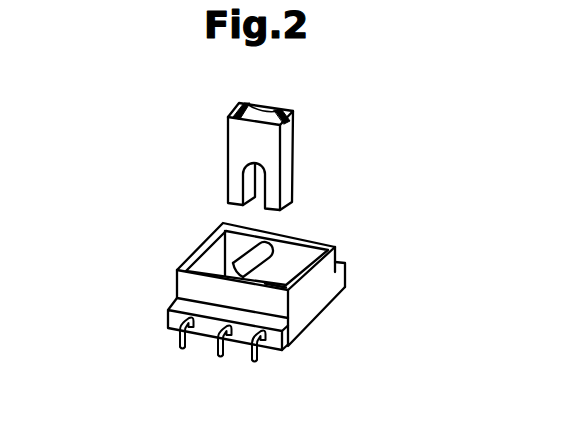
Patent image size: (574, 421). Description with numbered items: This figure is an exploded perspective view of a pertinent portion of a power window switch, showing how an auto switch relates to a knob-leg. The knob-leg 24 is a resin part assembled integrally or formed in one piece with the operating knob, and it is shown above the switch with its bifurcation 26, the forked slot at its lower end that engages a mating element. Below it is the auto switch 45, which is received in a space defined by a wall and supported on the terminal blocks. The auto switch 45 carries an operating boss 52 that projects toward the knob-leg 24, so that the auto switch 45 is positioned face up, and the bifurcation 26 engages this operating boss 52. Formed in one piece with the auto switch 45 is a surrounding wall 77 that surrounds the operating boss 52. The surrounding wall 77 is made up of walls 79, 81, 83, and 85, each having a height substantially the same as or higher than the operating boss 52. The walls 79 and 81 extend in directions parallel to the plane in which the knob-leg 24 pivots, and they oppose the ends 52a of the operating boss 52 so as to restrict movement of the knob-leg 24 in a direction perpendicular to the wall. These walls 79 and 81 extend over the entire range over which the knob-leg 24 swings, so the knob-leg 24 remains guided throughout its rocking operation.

The knob-leg 24 is at (291, 141).
The bifurcation 26 is at (250, 177).
The auto switch 45 is at (347, 262).
The operating boss 52 is at (233, 263).
The ends of the operating boss 52a is at (268, 247).
The surrounding wall 77 is at (321, 244).
The wall 79 is at (299, 236).
The wall 81 is at (277, 291).
The wall 83 is at (318, 271).
The wall 85 is at (183, 261).